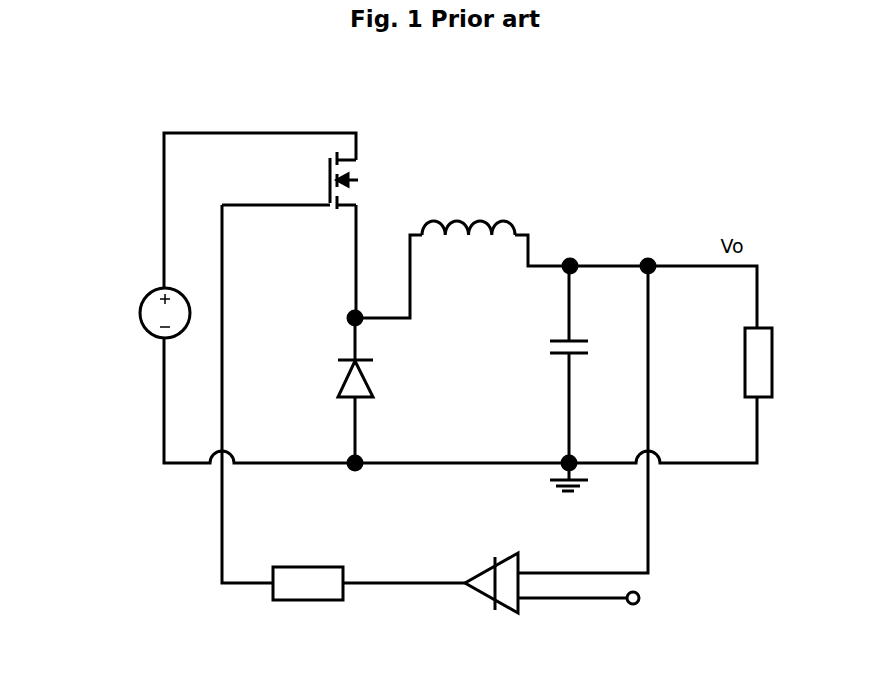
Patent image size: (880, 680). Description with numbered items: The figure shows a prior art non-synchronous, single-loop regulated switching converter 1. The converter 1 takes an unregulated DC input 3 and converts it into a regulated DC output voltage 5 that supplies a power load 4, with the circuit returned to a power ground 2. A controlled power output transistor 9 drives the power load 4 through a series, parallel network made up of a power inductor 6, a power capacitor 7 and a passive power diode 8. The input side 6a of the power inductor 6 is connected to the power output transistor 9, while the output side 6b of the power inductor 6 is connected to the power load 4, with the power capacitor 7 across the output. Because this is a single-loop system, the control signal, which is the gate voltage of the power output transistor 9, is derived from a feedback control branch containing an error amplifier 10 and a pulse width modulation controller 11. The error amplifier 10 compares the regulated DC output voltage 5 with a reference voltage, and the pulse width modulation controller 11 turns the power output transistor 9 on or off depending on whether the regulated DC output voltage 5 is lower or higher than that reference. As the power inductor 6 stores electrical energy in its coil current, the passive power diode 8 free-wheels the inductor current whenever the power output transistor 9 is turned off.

The single-loop regulated switching converter 1 is at (72, 111).
The power ground 2 is at (424, 470).
The unregulated DC input 3 is at (141, 292).
The power load 4 is at (781, 362).
The regulated DC output voltage 5 is at (651, 255).
The power inductor 6 is at (468, 212).
The input side of the power inductor 6a is at (346, 312).
The output side of the power inductor 6b is at (576, 255).
The power capacitor 7 is at (553, 360).
The passive power diode 8 is at (336, 373).
The power output transistor 9 is at (361, 174).
The error amplifier 10 is at (483, 571).
The pulse width modulation (PWM) controller 11 is at (316, 606).